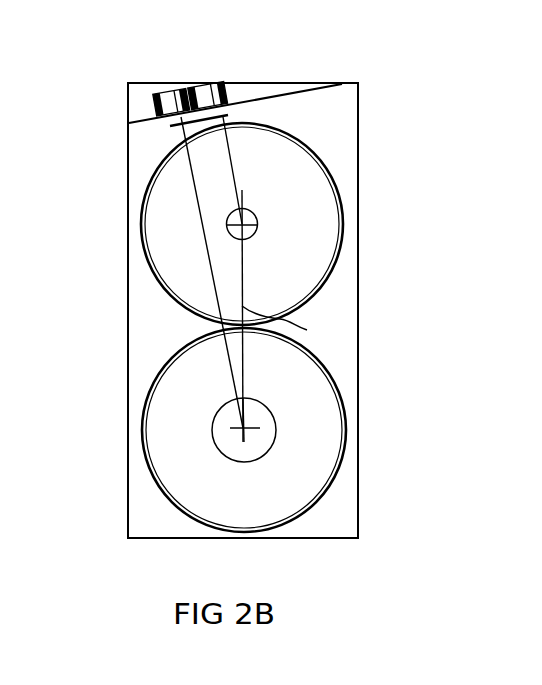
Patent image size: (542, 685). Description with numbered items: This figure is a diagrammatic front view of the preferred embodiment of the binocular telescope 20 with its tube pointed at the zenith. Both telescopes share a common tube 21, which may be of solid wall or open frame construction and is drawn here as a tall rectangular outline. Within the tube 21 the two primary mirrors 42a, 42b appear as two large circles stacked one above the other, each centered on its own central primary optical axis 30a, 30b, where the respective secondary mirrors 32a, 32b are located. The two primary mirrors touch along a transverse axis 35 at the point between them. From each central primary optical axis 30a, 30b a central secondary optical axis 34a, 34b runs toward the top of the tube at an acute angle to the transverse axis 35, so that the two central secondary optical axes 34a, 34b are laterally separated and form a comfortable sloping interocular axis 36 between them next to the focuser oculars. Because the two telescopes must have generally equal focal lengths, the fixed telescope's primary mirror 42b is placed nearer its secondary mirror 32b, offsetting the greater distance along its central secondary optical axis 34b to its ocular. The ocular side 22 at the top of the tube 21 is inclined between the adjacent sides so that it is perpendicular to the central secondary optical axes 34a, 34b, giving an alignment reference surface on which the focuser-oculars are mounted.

The tape cartridge 20 is at (118, 113).
The common tube 21 is at (128, 185).
The ocular side 22 is at (285, 93).
The central primary optical axis 30a is at (255, 232).
The central primary optical axis 30b is at (253, 434).
The secondary mirror 32a is at (259, 224).
The secondary mirror 32b is at (276, 422).
The central secondary optical axis 34a is at (229, 150).
The central secondary optical axis 34b is at (225, 352).
The transverse axis 35 is at (289, 325).
The sloping interocular axis 36 is at (186, 127).
The primary mirror 42a is at (146, 197).
The primary mirror 42b is at (144, 414).